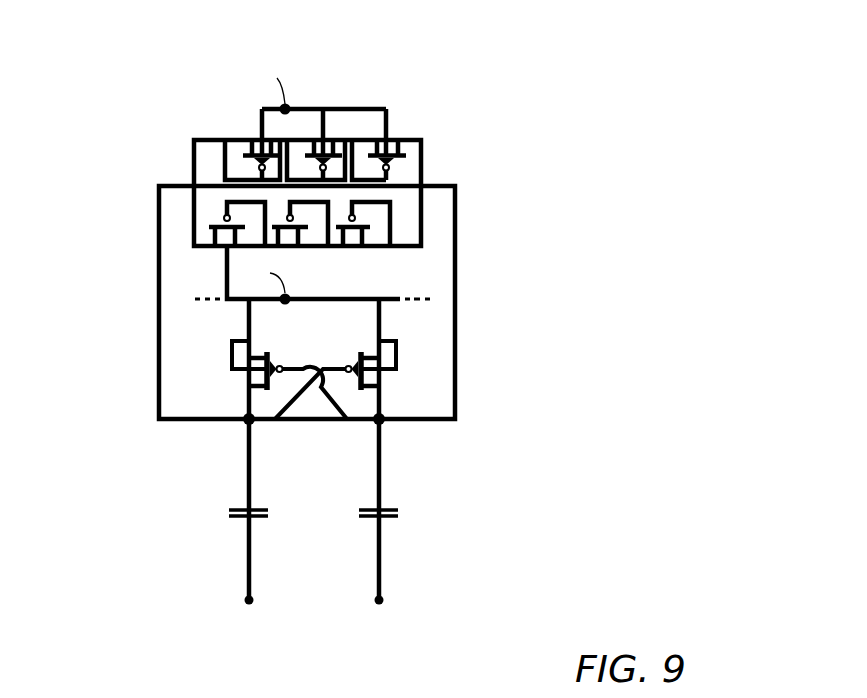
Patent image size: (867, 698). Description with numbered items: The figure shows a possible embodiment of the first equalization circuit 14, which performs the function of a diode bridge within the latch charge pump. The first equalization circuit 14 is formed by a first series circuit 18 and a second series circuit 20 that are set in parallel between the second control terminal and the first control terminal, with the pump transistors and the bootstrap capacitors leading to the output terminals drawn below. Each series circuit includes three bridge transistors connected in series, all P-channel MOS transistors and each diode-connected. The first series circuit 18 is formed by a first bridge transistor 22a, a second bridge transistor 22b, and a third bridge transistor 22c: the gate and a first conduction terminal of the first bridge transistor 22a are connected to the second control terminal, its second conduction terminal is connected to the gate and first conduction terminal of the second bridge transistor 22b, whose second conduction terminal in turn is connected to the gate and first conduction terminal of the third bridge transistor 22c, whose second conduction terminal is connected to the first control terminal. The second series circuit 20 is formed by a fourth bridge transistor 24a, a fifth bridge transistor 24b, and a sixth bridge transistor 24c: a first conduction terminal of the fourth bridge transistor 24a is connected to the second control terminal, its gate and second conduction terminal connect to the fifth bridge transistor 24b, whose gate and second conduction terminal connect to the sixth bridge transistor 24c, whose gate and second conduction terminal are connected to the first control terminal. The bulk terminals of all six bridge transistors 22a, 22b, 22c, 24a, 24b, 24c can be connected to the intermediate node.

The first equalization circuit 14 is at (445, 103).
The first series circuit 18 is at (218, 128).
The second series circuit 20 is at (190, 261).
The first bridge transistor 22a is at (258, 150).
The second bridge transistor 22b is at (320, 150).
The third bridge transistor 22c is at (383, 150).
The fourth bridge transistor 24a is at (225, 242).
The fifth bridge transistor 24b is at (294, 242).
The sixth bridge transistor 24c is at (356, 242).